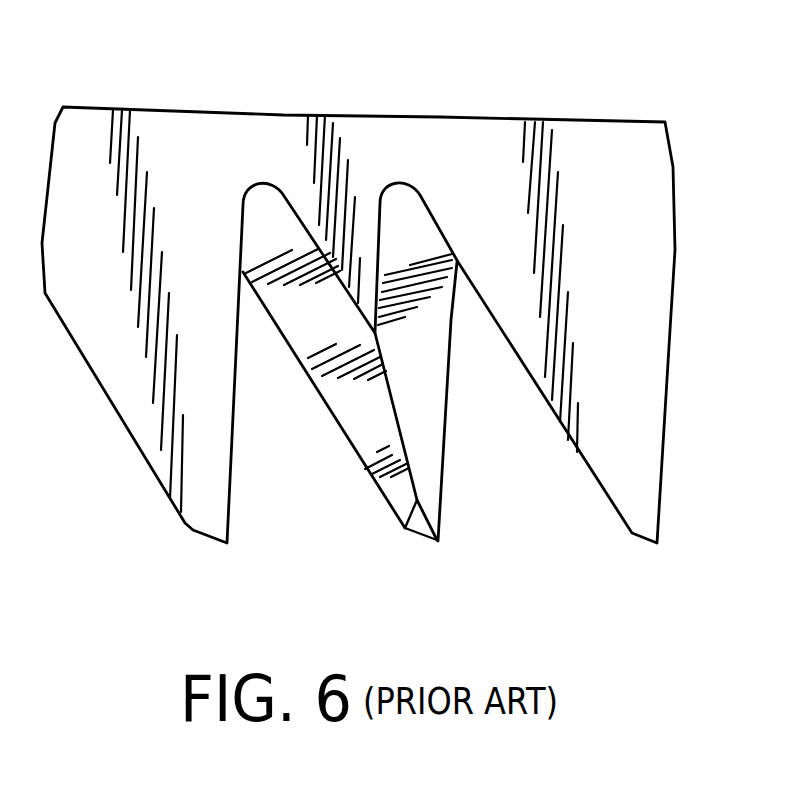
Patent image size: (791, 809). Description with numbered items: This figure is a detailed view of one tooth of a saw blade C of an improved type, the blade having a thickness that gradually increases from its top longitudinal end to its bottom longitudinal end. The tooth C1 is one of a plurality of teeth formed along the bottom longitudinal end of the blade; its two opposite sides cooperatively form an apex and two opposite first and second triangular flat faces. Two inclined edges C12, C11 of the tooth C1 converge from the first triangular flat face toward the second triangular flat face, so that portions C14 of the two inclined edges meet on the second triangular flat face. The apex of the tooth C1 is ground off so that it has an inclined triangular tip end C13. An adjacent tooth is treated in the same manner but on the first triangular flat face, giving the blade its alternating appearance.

The saw blade C is at (266, 96).
The tooth C1 is at (380, 429).
The inclined edge C11 is at (432, 394).
The inclined edge C12 is at (322, 372).
The inclined triangular tip end C13 is at (420, 521).
The portions of the two inclined edges C14 is at (393, 420).